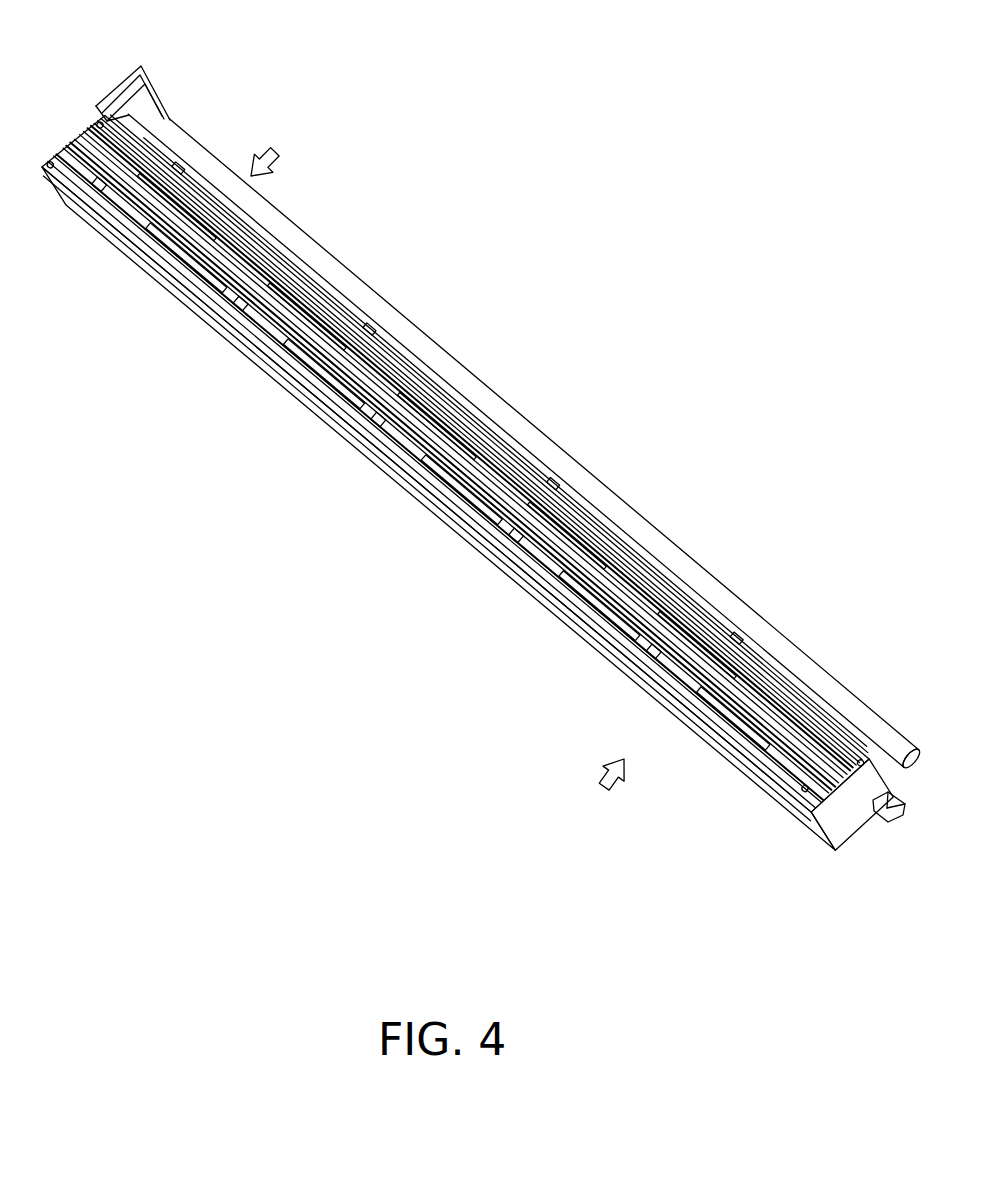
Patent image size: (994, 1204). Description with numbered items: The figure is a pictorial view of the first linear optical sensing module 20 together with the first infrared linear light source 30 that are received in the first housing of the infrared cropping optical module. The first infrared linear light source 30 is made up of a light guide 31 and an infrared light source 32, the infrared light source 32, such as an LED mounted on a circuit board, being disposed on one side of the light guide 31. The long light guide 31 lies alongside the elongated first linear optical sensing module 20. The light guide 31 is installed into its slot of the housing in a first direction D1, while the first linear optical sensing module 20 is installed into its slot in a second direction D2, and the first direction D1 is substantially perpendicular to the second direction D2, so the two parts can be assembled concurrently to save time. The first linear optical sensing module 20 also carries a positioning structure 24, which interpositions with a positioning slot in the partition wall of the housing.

The first linear optical sensing module 20 is at (358, 456).
The positioning structure 24 is at (170, 157).
The first infrared linear light source 30 is at (504, 400).
The light guide 31 is at (358, 288).
The infrared light source 32 is at (110, 85).
The first direction D1 is at (270, 145).
The second direction D2 is at (600, 776).